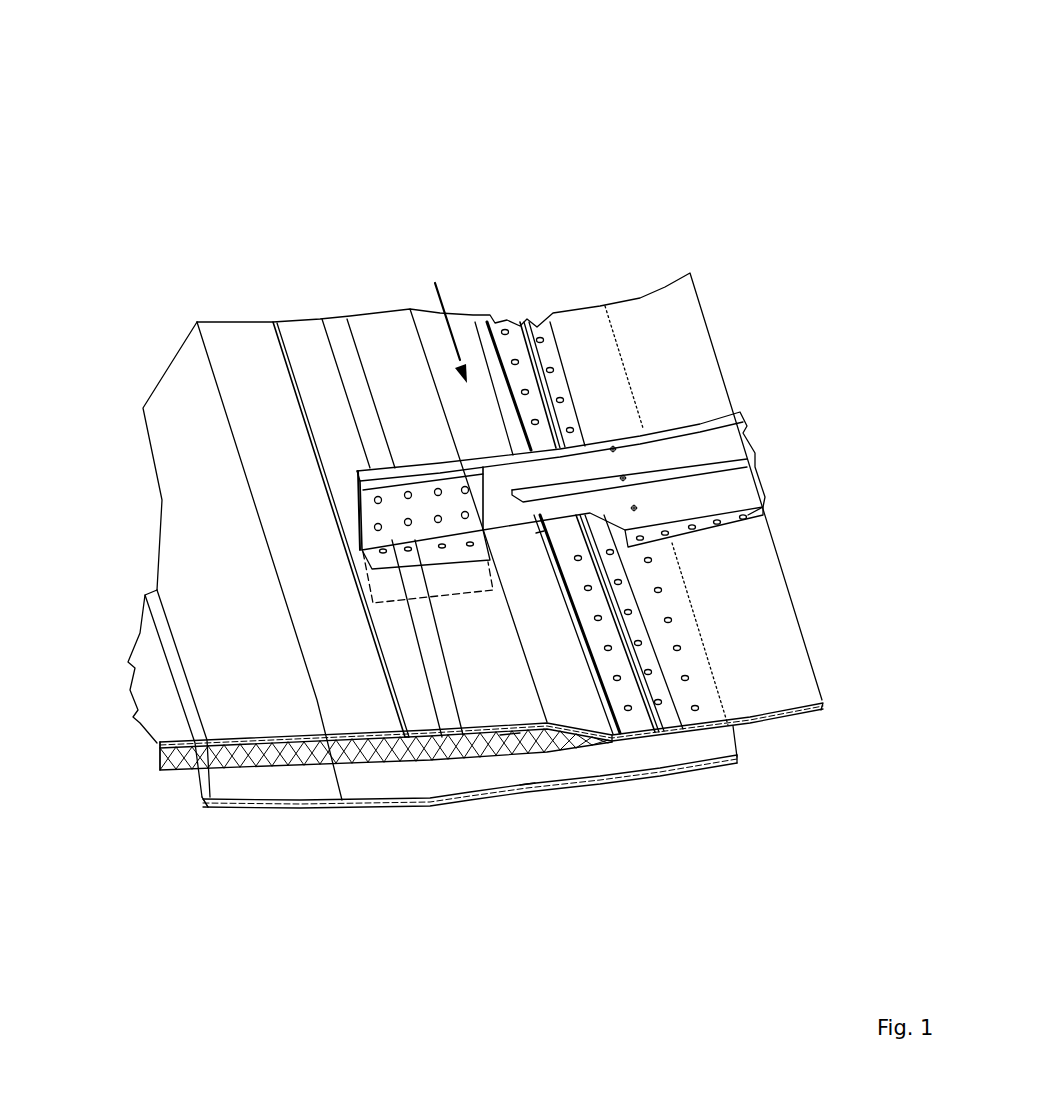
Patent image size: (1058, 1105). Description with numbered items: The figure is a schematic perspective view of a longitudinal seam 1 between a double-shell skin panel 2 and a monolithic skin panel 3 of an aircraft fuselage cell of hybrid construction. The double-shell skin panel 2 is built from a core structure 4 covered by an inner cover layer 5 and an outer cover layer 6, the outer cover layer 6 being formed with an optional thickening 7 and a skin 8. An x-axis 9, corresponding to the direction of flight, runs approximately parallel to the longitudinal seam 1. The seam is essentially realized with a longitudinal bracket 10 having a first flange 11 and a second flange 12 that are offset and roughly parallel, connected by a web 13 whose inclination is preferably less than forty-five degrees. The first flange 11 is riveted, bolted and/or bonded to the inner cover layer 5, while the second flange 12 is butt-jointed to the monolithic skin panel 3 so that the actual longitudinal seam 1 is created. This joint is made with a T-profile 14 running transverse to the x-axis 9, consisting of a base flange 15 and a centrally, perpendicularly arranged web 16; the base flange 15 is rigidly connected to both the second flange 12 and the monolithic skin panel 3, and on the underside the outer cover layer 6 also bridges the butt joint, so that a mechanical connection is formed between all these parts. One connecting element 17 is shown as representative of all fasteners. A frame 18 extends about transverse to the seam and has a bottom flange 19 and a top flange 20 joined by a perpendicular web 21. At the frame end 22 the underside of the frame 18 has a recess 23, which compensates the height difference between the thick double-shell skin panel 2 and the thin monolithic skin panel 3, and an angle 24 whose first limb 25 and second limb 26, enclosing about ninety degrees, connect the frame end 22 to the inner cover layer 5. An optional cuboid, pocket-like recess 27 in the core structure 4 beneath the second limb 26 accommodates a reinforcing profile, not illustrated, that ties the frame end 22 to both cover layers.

The longitudinal seam 1 is at (511, 266).
The double-shell skin panel 2 is at (133, 712).
The monolithic skin panel 3 is at (523, 706).
The core structure 4 is at (226, 767).
The inner cover layer 5 is at (135, 693).
The outer cover layer 6 is at (196, 797).
The thickening 7 is at (545, 769).
The skin 8 is at (528, 786).
The x-axis 9 is at (433, 293).
The longitudinal bracket 10 is at (520, 728).
The first flange 11 is at (374, 357).
The second flange 12 is at (622, 735).
The web 13 is at (607, 733).
The T-profile 14 is at (546, 290).
The base flange 15 is at (719, 653).
The web 16 is at (752, 515).
The connecting element 17 is at (773, 634).
The frame 18 is at (778, 445).
The bottom flange 19 is at (762, 521).
The top flange 20 is at (690, 425).
The web 21 is at (755, 472).
The frame end 22 is at (340, 512).
The recess 23 is at (538, 546).
The angle 24 is at (360, 540).
The first limb 25 is at (357, 498).
The second limb 26 is at (373, 575).
The recess 27 is at (443, 590).